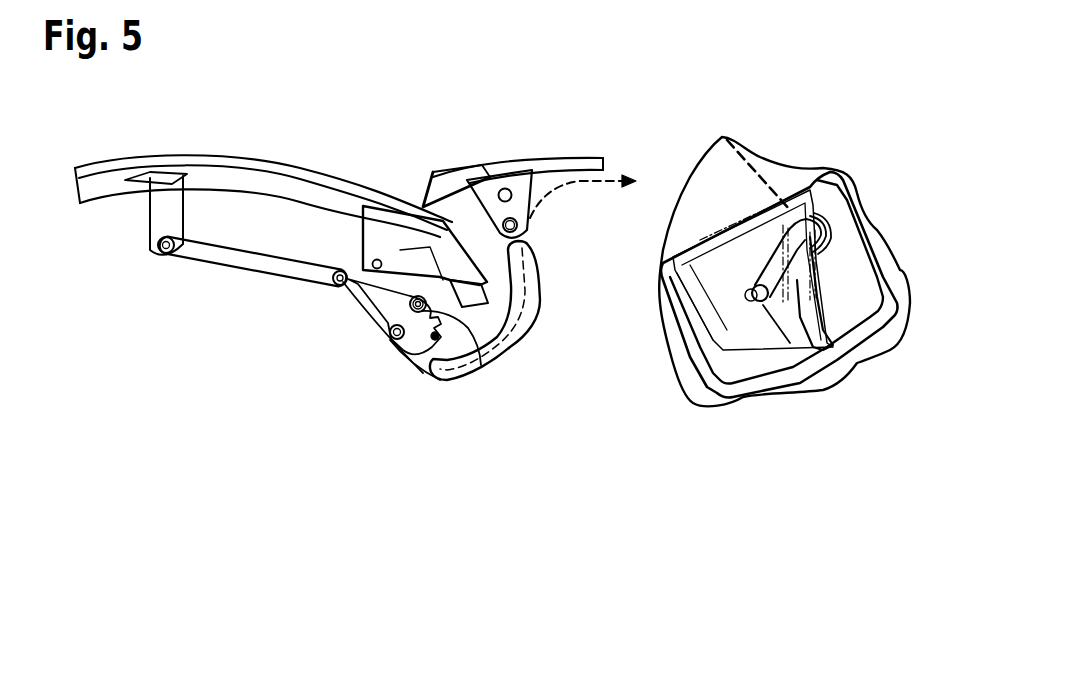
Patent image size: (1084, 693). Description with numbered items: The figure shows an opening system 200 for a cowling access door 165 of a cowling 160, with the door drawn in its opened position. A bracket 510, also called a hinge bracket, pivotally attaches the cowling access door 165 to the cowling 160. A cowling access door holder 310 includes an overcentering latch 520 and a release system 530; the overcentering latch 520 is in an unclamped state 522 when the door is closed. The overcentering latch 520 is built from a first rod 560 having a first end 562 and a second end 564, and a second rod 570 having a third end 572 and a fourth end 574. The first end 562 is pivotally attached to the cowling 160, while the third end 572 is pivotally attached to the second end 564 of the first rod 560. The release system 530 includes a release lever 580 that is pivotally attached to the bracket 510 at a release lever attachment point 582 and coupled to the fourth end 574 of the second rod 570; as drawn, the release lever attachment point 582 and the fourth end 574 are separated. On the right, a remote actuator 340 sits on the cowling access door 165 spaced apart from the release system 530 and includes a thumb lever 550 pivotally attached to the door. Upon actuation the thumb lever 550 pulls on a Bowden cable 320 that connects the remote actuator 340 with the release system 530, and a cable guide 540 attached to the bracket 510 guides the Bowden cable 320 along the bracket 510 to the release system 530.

The cowling 160 is at (269, 166).
The cowling access door 165 is at (560, 162).
The opening system 200 is at (438, 98).
The cowling access door holder 310 is at (250, 408).
The Bowden cable 320 is at (548, 192).
The remote actuator 340 is at (773, 415).
The bracket 510 is at (427, 368).
The overcentering latch 520 is at (205, 290).
The unclamped state 522 is at (298, 306).
The release system 530 is at (495, 395).
The cable guide 540 is at (541, 307).
The thumb lever 550 is at (802, 318).
The first rod 560 is at (242, 262).
The first end 562 is at (160, 258).
The second end 564 is at (343, 266).
The second rod 570 is at (388, 333).
The third end 572 is at (330, 286).
The fourth end 574 is at (440, 316).
The release lever 580 is at (431, 334).
The release lever attachment point 582 is at (387, 338).